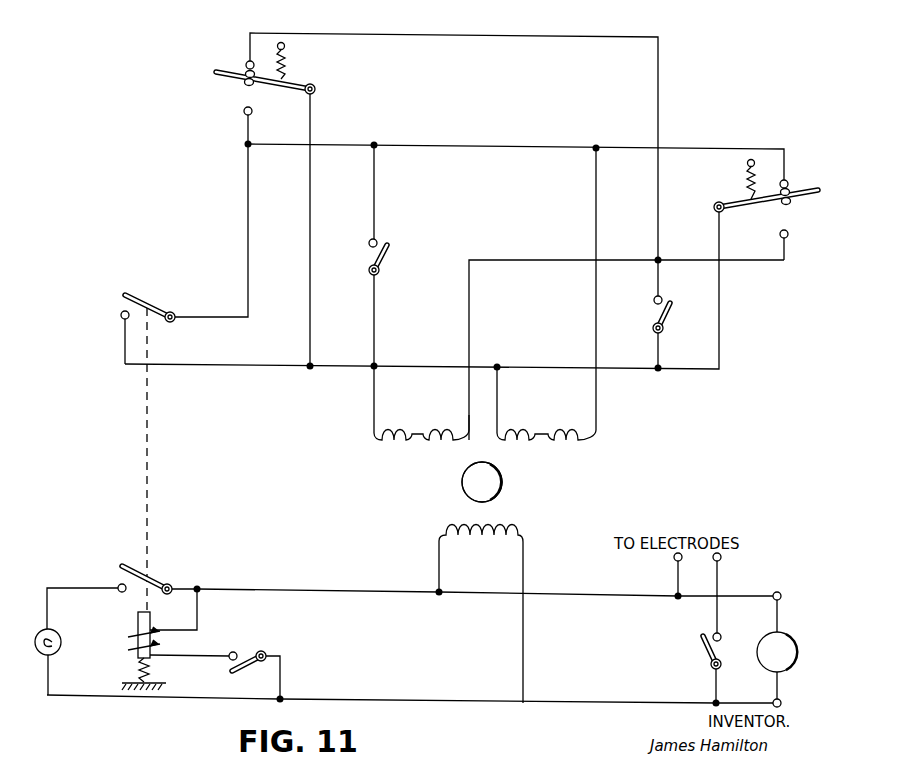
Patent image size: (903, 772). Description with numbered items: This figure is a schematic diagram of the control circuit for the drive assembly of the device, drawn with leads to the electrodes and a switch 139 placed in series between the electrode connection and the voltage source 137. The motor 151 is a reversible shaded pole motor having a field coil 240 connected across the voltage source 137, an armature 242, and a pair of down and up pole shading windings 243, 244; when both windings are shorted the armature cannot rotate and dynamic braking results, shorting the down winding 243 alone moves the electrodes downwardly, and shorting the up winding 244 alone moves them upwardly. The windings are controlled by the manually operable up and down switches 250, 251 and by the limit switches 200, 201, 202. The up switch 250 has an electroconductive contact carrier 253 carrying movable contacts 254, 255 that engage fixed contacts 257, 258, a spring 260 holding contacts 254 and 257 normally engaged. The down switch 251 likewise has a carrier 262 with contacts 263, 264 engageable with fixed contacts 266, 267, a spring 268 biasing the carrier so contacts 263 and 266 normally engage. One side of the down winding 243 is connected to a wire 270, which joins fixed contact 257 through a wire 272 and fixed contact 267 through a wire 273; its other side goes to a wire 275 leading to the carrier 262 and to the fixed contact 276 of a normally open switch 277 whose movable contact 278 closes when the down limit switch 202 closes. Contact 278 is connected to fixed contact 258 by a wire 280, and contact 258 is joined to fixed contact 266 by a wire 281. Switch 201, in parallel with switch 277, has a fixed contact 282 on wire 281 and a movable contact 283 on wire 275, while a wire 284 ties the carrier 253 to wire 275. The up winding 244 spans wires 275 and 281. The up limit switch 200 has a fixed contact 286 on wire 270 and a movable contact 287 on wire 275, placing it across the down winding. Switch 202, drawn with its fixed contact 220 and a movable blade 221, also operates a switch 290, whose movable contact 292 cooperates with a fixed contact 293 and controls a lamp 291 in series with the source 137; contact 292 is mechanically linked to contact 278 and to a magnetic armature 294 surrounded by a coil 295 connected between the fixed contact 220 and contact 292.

The voltage source 137 is at (796, 640).
The power switch 139 is at (700, 654).
The motor 151 is at (506, 485).
The up limit switch 200 is at (659, 322).
The limit switch 201 is at (383, 263).
The down limit switch 202 is at (253, 655).
The fixed contact 220 is at (232, 651).
The switch blade 221 is at (247, 669).
The field coil 240 is at (476, 536).
The armature 242 is at (462, 487).
The down pole shading winding 243 is at (418, 433).
The up pole shading winding 244 is at (548, 433).
The up switch 250 is at (254, 74).
The down switch 251 is at (764, 202).
The contact carrier 253 is at (305, 95).
The movable contact 254 is at (245, 72).
The movable contact 255 is at (245, 84).
The fixed contact 257 is at (246, 62).
The fixed contact 258 is at (245, 114).
The spring 260 is at (289, 70).
The carrier 262 is at (716, 202).
The contact 263 is at (790, 190).
The contact 264 is at (792, 204).
The fixed contact 266 is at (788, 181).
The fixed contact 267 is at (780, 233).
The spring 268 is at (745, 178).
The wire 270 is at (517, 259).
The wire 272 is at (540, 36).
The wire 273 is at (758, 261).
The wire 275 is at (236, 368).
The fixed contact 276 is at (121, 318).
The normally open switch 277 is at (129, 319).
The movable contact 278 is at (157, 306).
The wire 280 is at (247, 236).
The wire 281 is at (497, 147).
The fixed contact 282 is at (369, 243).
The movable contact 283 is at (390, 262).
The wire 284 is at (309, 236).
The fixed contact 286 is at (654, 299).
The movable contact 287 is at (668, 318).
The switch 290 is at (131, 588).
The lamp 291 is at (58, 652).
The movable contact 292 is at (158, 580).
The fixed contact 293 is at (118, 592).
The magnetic armature 294 is at (136, 625).
The coil 295 is at (134, 640).